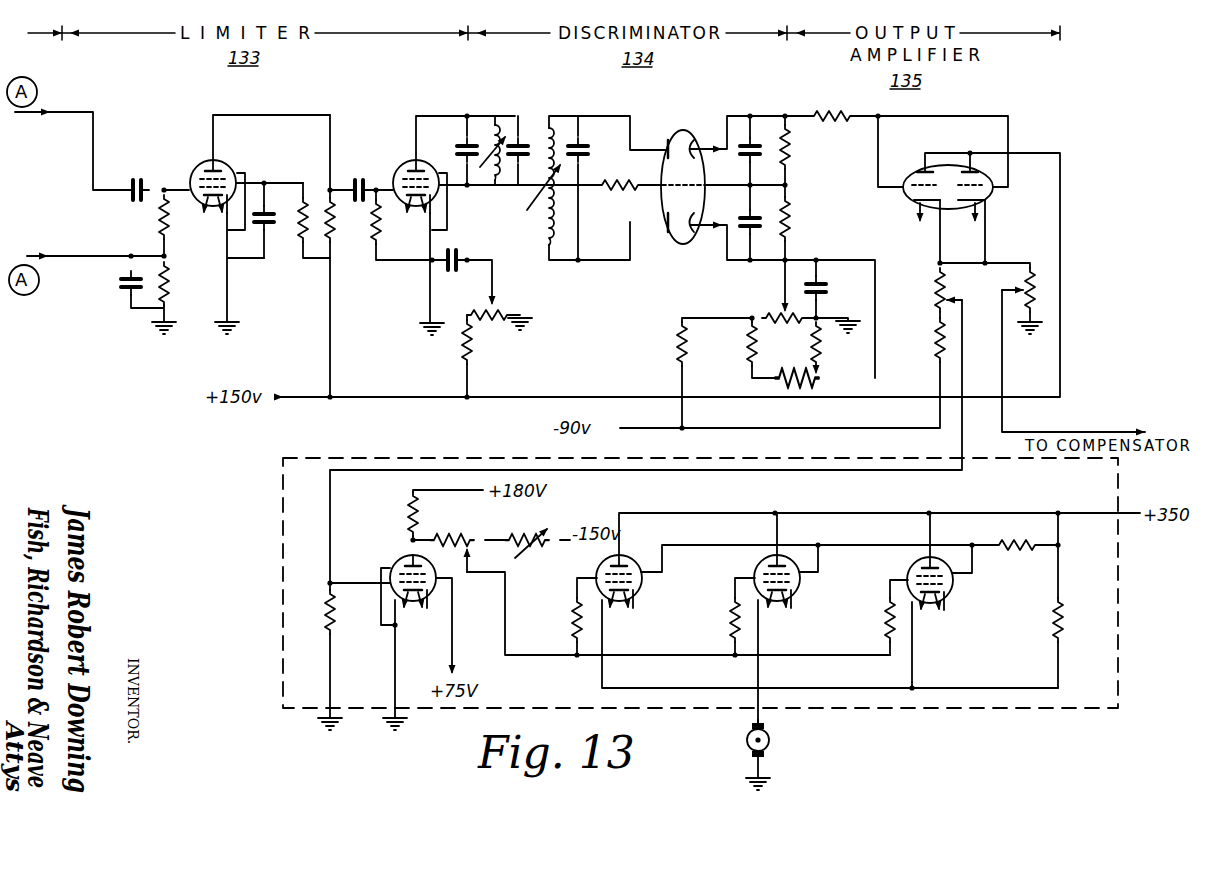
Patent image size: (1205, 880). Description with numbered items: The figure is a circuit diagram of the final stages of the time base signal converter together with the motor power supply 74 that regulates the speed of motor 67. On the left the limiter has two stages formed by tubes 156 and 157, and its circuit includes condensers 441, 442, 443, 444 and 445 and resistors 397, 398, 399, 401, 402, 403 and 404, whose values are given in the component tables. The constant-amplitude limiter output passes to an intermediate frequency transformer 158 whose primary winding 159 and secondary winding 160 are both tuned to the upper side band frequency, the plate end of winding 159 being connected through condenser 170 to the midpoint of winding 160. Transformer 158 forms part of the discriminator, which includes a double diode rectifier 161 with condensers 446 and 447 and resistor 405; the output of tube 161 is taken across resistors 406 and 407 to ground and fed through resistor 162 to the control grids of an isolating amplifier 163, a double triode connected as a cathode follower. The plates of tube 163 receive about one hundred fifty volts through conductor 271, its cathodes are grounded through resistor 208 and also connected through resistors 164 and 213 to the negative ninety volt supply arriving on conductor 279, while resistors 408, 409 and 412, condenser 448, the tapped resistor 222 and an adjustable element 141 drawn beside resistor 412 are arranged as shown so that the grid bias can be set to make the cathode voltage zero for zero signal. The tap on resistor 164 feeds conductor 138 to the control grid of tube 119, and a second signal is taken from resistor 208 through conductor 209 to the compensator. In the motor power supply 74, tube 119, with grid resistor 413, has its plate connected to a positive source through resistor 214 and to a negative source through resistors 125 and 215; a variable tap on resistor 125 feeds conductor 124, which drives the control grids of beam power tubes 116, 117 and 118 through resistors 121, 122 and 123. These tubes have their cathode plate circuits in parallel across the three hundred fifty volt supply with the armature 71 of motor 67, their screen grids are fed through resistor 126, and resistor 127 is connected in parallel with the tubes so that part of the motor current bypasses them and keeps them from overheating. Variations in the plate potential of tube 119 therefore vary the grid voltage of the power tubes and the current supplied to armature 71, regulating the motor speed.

The condenser 441 is at (138, 182).
The resistor 397 is at (161, 229).
The resistor 398 is at (166, 301).
The condenser 442 is at (130, 295).
The first limiter stage 156 is at (204, 166).
The condenser 443 is at (266, 210).
The resistor 399 is at (301, 242).
The resistor 401 is at (330, 242).
The condenser 444 is at (360, 182).
The resistor 402 is at (378, 244).
The second limiter stage 157 is at (412, 160).
The condenser 445 is at (452, 268).
The resistor 403 is at (495, 322).
The resistor 404 is at (463, 352).
The conductor 271 is at (311, 398).
The primary winding 159 is at (493, 125).
The secondary winding 160 is at (555, 132).
The I. F. transformer 158 is at (546, 120).
The condenser 170 is at (528, 189).
The resistor 405 is at (618, 192).
The double diode rectifier 161 is at (686, 130).
The condenser 446 is at (747, 154).
The condenser 447 is at (748, 222).
The resistor 406 is at (790, 149).
The resistor 407 is at (790, 219).
The resistor 162 is at (835, 111).
The isolating amplifier 163 is at (904, 198).
The resistor 164 is at (946, 290).
The resistor 213 is at (937, 347).
The cathode follower resistor 208 is at (1035, 295).
The conductor 209 is at (1100, 434).
The condenser 448 is at (822, 291).
The resistor 222 is at (789, 306).
The potentiometer 141 is at (822, 347).
The resistor 408 is at (678, 346).
The resistor 409 is at (748, 348).
The resistor 412 is at (798, 388).
The conductor 279 is at (666, 428).
The motor power supply unit 74 is at (959, 708).
The conductor 138 is at (330, 522).
The resistor 413 is at (328, 625).
The resistor 214 is at (418, 512).
The tube 119 is at (395, 560).
The resistor 125 is at (469, 536).
The resistor 215 is at (537, 534).
The conductor 124 is at (506, 617).
The resistor 121 is at (575, 628).
The beam power tube 116 is at (636, 593).
The resistor 122 is at (733, 625).
The beam power tube 117 is at (795, 592).
The resistor 123 is at (888, 628).
The beam power tube 118 is at (948, 590).
The resistor 126 is at (1005, 554).
The resistor 127 is at (1062, 642).
The motor 67 is at (772, 748).
The armature 71 is at (748, 740).